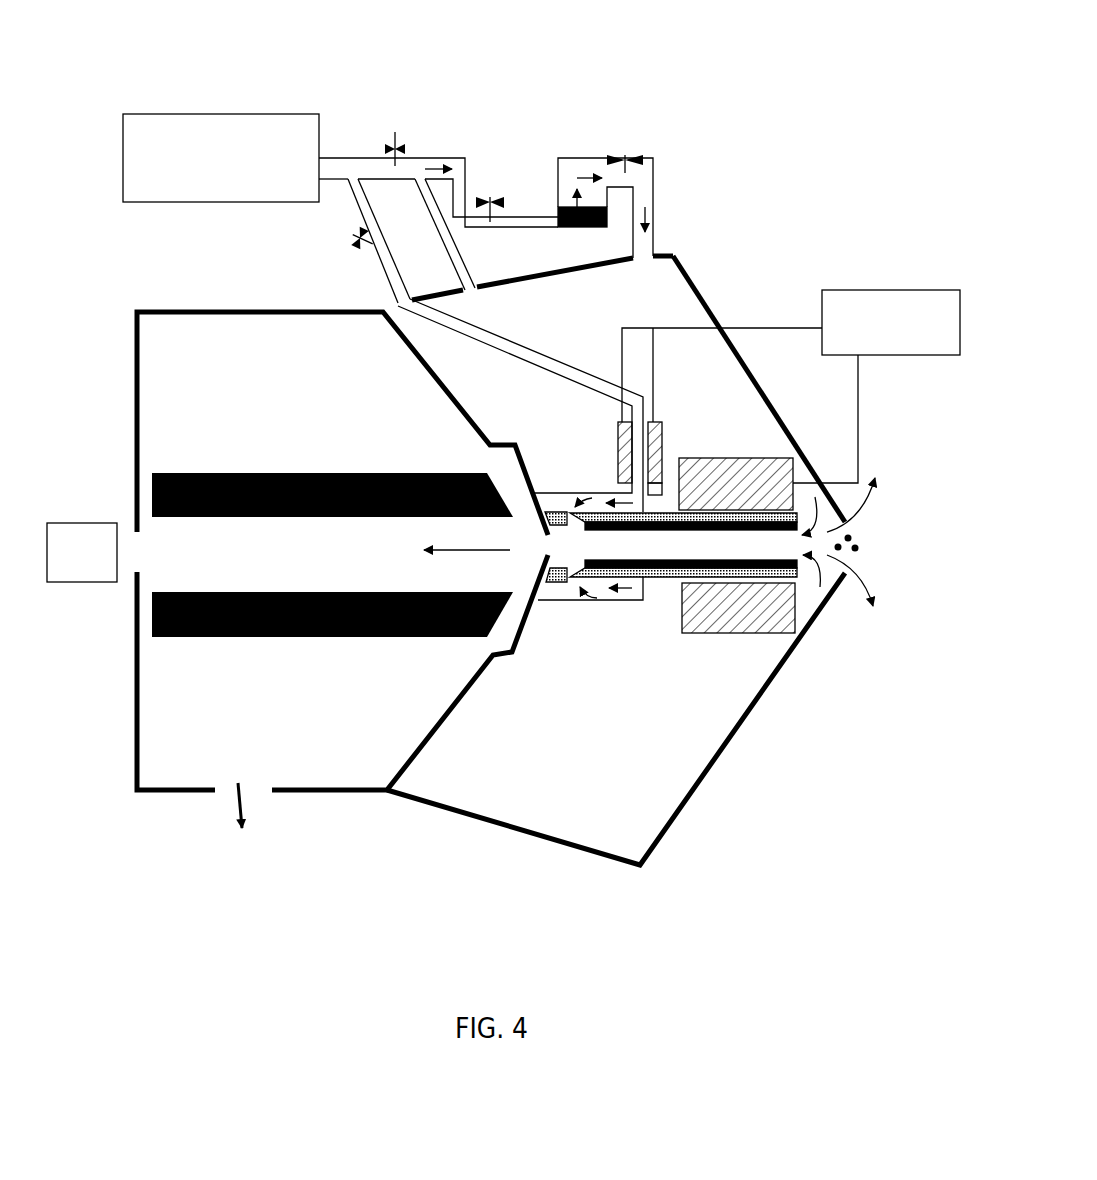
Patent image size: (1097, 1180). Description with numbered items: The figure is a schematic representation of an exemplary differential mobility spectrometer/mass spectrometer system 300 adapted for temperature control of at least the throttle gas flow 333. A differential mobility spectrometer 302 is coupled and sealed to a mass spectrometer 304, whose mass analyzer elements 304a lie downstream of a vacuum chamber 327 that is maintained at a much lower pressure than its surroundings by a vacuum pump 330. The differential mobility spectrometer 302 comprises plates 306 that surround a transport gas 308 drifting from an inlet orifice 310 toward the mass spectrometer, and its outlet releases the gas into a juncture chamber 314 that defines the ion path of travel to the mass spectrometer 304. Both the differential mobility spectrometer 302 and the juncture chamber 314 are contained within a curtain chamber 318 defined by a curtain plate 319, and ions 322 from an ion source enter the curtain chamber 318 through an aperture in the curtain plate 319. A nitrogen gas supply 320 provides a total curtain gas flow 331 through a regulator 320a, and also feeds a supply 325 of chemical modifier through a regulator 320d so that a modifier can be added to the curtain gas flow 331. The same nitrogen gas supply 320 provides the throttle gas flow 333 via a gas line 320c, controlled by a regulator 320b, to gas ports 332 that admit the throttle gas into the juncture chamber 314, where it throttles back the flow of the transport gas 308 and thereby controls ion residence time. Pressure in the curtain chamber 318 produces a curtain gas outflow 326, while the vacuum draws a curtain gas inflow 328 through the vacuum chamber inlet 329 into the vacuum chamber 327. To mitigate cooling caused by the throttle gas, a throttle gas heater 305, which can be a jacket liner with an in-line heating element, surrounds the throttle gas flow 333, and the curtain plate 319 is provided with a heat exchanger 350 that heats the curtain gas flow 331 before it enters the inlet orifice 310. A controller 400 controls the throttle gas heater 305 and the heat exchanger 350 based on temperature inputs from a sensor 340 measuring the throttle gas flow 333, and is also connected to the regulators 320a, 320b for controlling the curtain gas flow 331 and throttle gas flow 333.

The differential mobility spectrometer/mass spectrometer system 300 is at (640, 52).
The differential mobility spectrometer 302 is at (663, 580).
The mass spectrometer 304 is at (303, 466).
The mass analyzer elements 304a is at (79, 582).
The throttle gas heater 305 is at (618, 443).
The plates 306 is at (788, 535).
The transport gas 308 is at (604, 547).
The inlet orifice 310 is at (802, 548).
The juncture chamber 314 is at (566, 547).
The curtain chamber 318 is at (652, 297).
The curtain plate 319 is at (715, 313).
The nitrogen gas supply 320 is at (195, 113).
The regulator 320a is at (437, 137).
The regulator 320b is at (365, 253).
The gas line 320c is at (385, 272).
The regulator 320d is at (508, 190).
The ions 322 is at (864, 545).
The supply of chemical modifier 325 is at (653, 167).
The curtain gas outflow 326 is at (868, 559).
The vacuum chamber 327 is at (243, 311).
The curtain gas inflow 328 is at (465, 550).
The vacuum chamber inlet 329 is at (547, 548).
The vacuum pump 330 is at (261, 823).
The curtain gas flow 331 is at (470, 291).
The gas ports 332 is at (563, 507).
The throttle gas flow 333 is at (595, 593).
The sensor 340 is at (662, 483).
The heat exchanger 350 is at (752, 458).
The controller 400 is at (915, 290).